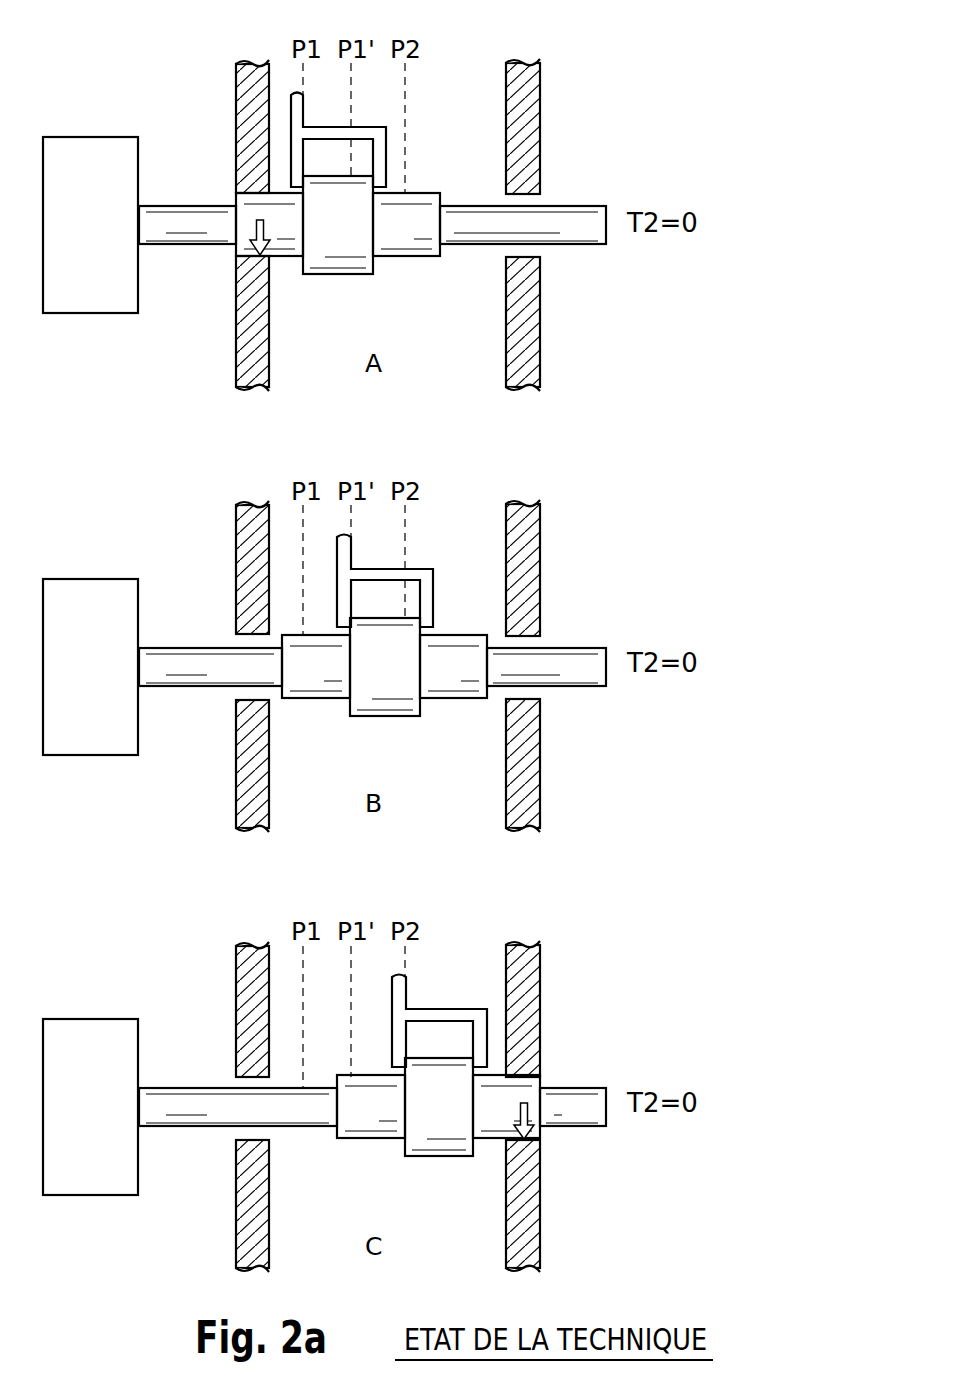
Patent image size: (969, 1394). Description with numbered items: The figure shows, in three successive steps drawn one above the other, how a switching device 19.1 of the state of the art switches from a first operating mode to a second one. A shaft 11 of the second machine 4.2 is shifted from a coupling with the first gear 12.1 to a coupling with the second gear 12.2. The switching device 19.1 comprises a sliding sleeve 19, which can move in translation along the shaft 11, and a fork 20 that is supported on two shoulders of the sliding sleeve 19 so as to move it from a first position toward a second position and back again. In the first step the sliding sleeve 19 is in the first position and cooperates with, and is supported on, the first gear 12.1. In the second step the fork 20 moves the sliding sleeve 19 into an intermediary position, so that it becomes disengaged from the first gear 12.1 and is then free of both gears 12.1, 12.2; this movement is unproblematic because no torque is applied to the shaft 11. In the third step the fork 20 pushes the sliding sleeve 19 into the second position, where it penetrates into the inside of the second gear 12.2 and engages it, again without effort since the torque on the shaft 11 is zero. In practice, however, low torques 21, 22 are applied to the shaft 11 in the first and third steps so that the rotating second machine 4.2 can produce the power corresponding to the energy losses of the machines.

The second machine 4.2 is at (90, 315).
The shaft 11 is at (193, 246).
The first gear 12.1 is at (247, 100).
The second gear 12.2 is at (528, 98).
The sliding sleeve 19 is at (406, 258).
The switching device 19.1 is at (250, 44).
The fork 20 is at (297, 126).
The low torque 21 is at (258, 217).
The low torque 22 is at (528, 1112).